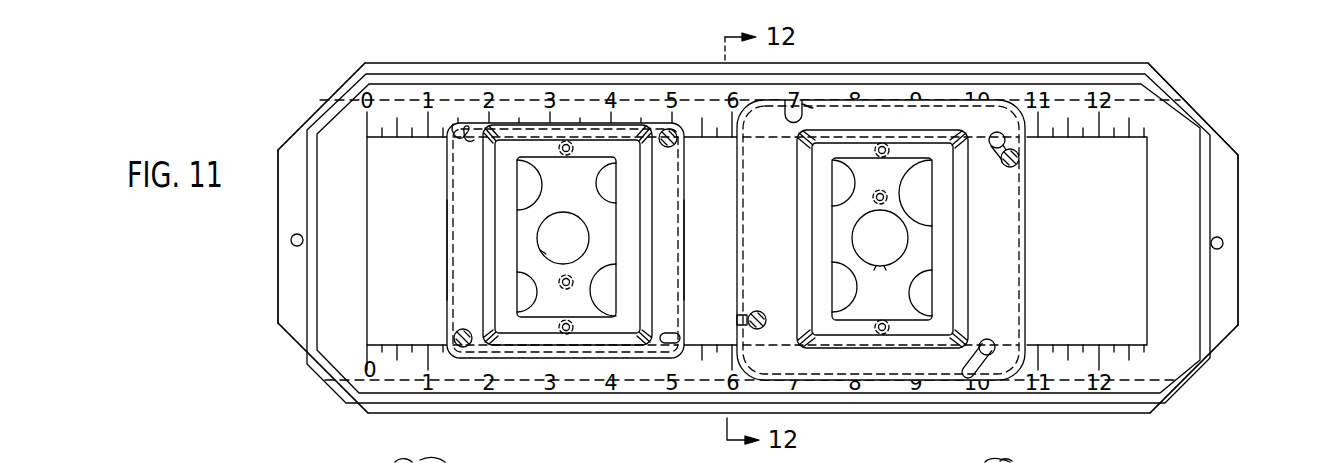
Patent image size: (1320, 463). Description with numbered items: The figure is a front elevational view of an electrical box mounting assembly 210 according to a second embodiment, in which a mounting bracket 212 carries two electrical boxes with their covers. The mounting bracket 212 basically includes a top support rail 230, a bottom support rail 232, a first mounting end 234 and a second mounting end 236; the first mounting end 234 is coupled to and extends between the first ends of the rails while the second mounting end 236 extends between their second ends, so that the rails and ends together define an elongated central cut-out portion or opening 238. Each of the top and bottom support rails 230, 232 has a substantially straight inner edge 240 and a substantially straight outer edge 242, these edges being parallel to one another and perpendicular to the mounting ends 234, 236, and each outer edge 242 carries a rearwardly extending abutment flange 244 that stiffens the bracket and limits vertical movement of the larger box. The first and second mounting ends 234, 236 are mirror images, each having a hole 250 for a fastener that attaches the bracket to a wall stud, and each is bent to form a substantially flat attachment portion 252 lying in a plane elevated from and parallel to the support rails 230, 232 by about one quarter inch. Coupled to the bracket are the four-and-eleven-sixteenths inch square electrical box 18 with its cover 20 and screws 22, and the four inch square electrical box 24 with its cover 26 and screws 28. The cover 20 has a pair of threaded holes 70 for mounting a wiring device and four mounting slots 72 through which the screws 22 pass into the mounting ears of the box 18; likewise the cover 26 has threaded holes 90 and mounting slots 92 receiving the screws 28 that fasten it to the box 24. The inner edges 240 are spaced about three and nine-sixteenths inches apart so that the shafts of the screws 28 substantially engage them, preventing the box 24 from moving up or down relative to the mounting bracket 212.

The 4 11/16 inch square electrical box 18 is at (1030, 213).
The 4 11/16 inch square cover 20 is at (1036, 246).
The screws 22 is at (762, 310).
The 4 inch square electrical box 24 is at (447, 186).
The 4 inch square cover 26 is at (437, 214).
The screws 28 is at (462, 329).
The threaded holes 70 is at (883, 143).
The mounting slots 72 is at (813, 107).
The threaded holes 90 is at (566, 153).
The mounting slots 92 is at (447, 320).
The electrical box mounting assembly 210 is at (1184, 51).
The mounting bracket 212 is at (325, 95).
The top support rail 230 is at (690, 94).
The bottom support rail 232 is at (695, 387).
The first mounting end 234 is at (340, 131).
The second mounting end 236 is at (1173, 155).
The central cut-out portion or opening 238 is at (1123, 276).
The inner edge 240 is at (1110, 140).
The outer edge 242 is at (1143, 100).
The abutment flange 244 is at (1008, 63).
The hole 250 is at (291, 242).
The attachment portion 252 is at (290, 282).